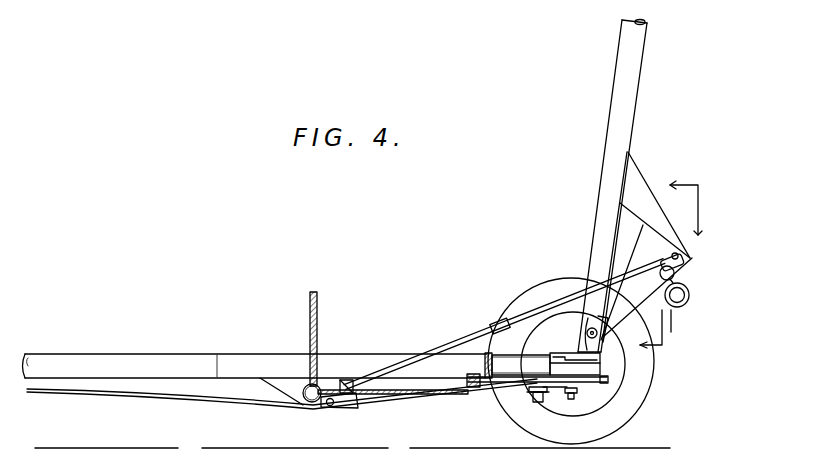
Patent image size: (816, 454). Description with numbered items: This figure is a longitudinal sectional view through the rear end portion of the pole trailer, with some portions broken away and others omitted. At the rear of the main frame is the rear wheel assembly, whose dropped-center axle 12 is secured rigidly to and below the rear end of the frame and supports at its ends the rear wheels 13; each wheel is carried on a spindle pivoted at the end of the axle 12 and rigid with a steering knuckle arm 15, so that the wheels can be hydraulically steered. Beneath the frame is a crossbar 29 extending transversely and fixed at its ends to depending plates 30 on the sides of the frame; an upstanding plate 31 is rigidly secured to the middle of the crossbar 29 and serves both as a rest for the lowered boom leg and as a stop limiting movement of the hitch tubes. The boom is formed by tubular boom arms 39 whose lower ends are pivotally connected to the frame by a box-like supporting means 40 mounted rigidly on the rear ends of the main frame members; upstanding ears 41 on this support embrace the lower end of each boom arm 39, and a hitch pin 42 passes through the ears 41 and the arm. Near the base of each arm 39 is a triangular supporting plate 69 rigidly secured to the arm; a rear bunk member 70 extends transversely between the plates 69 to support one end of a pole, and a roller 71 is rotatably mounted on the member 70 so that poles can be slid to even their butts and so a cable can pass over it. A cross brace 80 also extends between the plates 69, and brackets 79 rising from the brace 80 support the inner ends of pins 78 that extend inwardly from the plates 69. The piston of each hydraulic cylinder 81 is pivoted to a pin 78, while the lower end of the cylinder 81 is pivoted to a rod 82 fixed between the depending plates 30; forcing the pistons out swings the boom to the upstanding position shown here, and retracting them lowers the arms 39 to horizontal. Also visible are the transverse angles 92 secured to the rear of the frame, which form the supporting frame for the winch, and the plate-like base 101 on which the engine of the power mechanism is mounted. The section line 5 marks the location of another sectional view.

The section line 5- 5 is at (669, 273).
The axle 12 is at (575, 401).
The rear wheel 13 is at (638, 413).
The steering knuckle arm 15 is at (537, 403).
The crossbar 29 is at (305, 387).
The depending plate 30 is at (280, 388).
The upstanding plate 31 is at (316, 343).
The boom arm 39 is at (613, 90).
The box-like supporting means 40 is at (603, 368).
The upstanding ear 41 is at (573, 343).
The hitch pin 42 is at (587, 333).
The triangular supporting plate 69 is at (640, 182).
The rear bunk member 70 is at (693, 281).
The roller 71 is at (683, 324).
The pin 78 is at (693, 252).
The bracket 79 is at (692, 264).
The cross brace 80 is at (653, 282).
The hydraulic cylinder 81 is at (480, 343).
The rod 82 is at (330, 406).
The angle 92 is at (622, 339).
The plate-like base 101 is at (437, 400).